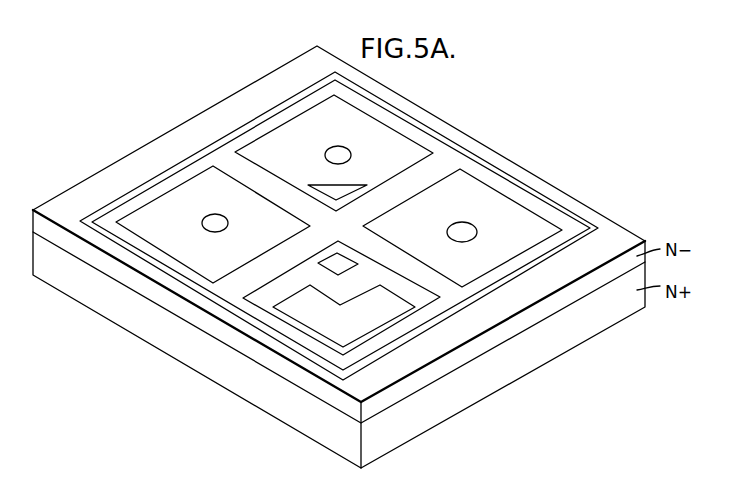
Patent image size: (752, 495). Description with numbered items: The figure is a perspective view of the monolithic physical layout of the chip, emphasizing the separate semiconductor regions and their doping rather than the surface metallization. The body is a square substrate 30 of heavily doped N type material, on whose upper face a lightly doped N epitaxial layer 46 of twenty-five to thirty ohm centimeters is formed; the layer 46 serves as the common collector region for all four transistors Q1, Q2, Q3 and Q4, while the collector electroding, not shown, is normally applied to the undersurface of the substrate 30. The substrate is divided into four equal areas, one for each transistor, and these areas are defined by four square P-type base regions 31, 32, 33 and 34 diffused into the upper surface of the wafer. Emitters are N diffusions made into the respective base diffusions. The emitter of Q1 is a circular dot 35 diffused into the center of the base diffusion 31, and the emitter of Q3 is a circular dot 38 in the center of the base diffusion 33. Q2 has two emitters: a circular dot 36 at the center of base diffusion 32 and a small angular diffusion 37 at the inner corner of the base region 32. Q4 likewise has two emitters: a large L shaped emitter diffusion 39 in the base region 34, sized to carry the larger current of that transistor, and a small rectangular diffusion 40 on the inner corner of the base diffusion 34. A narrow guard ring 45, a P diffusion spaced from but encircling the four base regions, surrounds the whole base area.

The substrate 30 is at (543, 350).
The base region 31 is at (487, 197).
The base region 32 is at (270, 140).
The base region 33 is at (195, 187).
The base region 34 is at (260, 296).
The circular dot emitter 35 is at (463, 226).
The circular dot emitter 36 is at (338, 157).
The small angular diffusion 37 is at (333, 192).
The circular dot emitter 38 is at (215, 224).
The L shaped emitter diffusion 39 is at (383, 313).
The small rectangular diffusion 40 is at (338, 258).
The guard ring 45 is at (448, 138).
The N− epitaxial layer 46 is at (617, 235).
The transistor Q1 is at (474, 206).
The transistor Q2 is at (311, 129).
The transistor Q3 is at (196, 190).
The transistor Q4 is at (290, 315).